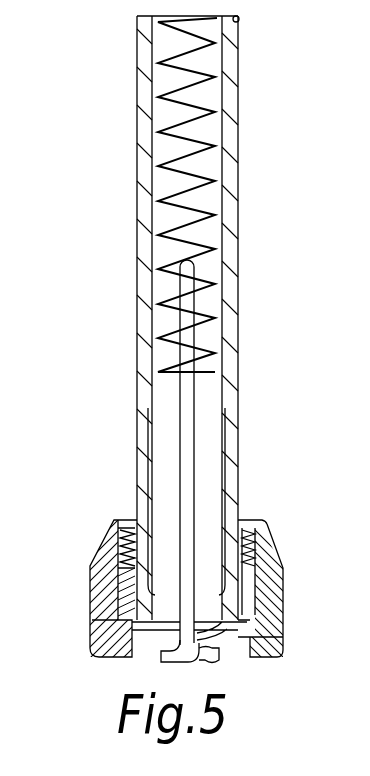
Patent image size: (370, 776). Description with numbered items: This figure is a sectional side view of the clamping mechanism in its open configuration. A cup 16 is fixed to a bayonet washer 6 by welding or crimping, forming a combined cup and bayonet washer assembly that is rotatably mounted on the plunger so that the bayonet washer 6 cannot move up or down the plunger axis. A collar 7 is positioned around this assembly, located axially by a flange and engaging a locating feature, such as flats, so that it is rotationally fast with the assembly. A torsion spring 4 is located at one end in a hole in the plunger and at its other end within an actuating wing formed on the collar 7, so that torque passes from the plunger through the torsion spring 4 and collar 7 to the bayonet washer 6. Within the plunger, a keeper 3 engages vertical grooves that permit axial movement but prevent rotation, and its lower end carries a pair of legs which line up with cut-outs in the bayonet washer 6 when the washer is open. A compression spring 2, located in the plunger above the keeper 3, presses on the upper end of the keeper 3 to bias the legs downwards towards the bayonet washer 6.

The compression spring 2 is at (208, 110).
The keeper part 3 is at (192, 387).
The torsion spring 4 is at (113, 525).
The bayonet washer 6 is at (128, 660).
The collar 7 is at (268, 533).
The cup 16 is at (117, 588).